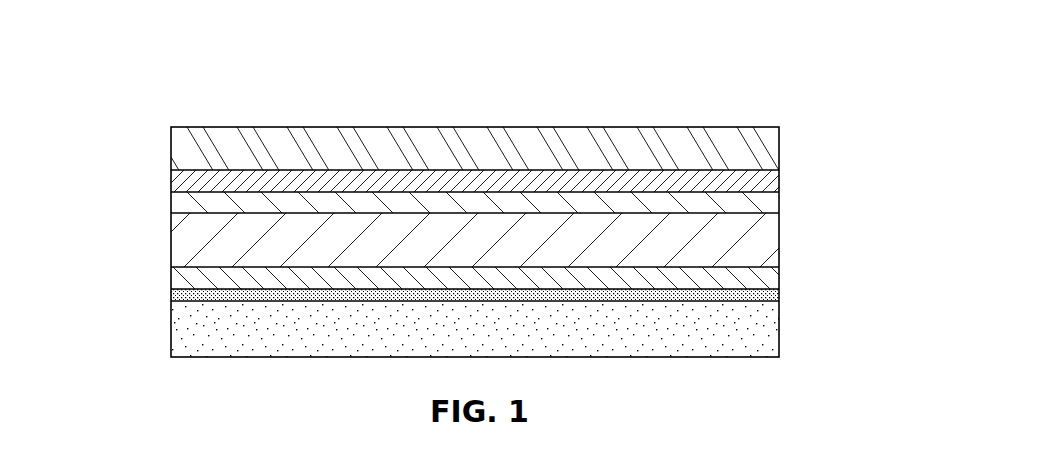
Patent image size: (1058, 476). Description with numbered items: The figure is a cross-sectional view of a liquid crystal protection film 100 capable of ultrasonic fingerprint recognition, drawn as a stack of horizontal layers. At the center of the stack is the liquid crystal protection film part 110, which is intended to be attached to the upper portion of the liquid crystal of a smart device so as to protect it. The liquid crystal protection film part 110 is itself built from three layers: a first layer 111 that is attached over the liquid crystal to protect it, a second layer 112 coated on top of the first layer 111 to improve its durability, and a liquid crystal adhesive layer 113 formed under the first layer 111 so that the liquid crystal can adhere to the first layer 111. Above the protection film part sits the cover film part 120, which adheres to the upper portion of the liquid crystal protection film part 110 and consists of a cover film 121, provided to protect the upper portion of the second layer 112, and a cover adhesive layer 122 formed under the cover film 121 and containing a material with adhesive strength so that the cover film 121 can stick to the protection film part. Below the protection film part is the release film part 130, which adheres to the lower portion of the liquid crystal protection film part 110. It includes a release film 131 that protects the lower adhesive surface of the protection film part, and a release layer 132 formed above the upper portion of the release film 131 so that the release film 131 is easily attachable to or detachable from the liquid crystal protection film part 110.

The liquid crystal protection film 100 is at (724, 64).
The liquid crystal protection film part 110 is at (398, 237).
The first layer 111 is at (171, 239).
The second layer 112 is at (171, 203).
The liquid crystal adhesive layer 113 is at (171, 278).
The cover film part 120 is at (553, 159).
The cover film 121 is at (779, 147).
The cover adhesive layer 122 is at (779, 182).
The release film part 130 is at (553, 317).
The release film 131 is at (779, 327).
The release layer 132 is at (779, 291).